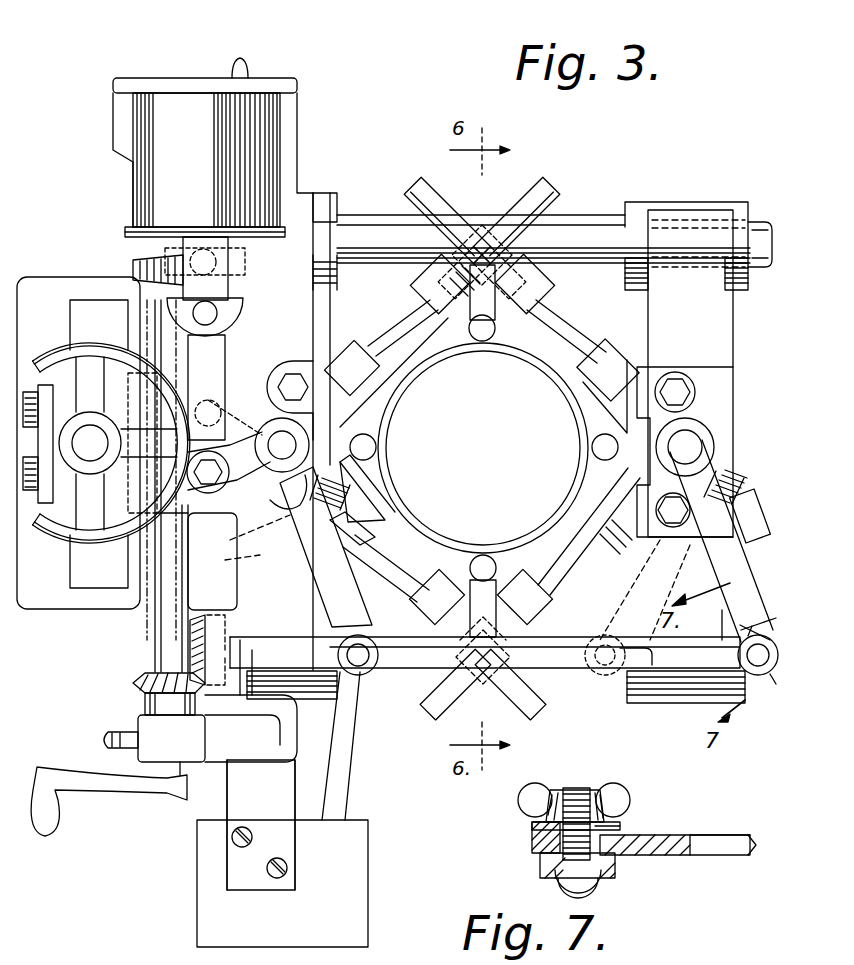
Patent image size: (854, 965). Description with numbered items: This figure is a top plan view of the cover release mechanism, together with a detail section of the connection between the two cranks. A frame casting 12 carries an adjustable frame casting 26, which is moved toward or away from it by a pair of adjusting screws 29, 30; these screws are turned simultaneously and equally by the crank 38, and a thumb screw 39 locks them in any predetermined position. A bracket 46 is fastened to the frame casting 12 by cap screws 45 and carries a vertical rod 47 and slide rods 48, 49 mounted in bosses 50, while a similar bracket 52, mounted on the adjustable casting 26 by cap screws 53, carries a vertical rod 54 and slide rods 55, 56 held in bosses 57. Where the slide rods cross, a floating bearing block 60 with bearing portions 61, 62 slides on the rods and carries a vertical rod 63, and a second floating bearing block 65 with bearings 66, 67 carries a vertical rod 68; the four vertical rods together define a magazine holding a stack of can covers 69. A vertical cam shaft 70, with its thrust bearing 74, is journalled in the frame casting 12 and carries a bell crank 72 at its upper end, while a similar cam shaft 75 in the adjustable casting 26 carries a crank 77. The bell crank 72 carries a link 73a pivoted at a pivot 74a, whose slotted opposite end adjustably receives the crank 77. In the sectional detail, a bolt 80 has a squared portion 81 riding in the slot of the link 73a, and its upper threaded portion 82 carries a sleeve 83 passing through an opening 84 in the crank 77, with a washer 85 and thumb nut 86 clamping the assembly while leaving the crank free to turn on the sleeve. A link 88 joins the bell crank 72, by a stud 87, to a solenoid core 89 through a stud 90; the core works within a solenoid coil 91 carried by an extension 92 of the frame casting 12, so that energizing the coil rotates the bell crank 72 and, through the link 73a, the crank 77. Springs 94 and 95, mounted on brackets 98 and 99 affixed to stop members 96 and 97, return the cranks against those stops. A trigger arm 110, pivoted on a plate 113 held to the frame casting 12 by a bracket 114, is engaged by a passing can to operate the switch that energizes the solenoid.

In FIG. 3, the frame casting 12 is at (318, 310).
In FIG. 3, the adjustable frame casting 26 is at (718, 342).
In FIG. 3, the adjusting screw 29 is at (602, 232).
In FIG. 3, the adjusting screw 30 is at (345, 675).
In FIG. 3, the crank 38 is at (102, 793).
In FIG. 3, the thumb screw 39 is at (118, 735).
In FIG. 3, the cap screws 45 is at (295, 372).
In FIG. 3, the bracket 46 is at (348, 385).
In FIG. 3, the vertical rod 47 is at (372, 443).
In FIG. 3, the slide rod 48 is at (408, 310).
In FIG. 3, the slide rod 49 is at (405, 560).
In FIG. 3, the bosses 50 is at (362, 352).
In FIG. 3, the bracket 52 is at (640, 388).
In FIG. 3, the cap screws 53 is at (668, 380).
In FIG. 3, the vertical rod 54 is at (596, 453).
In FIG. 3, the slide rod 55 is at (565, 335).
In FIG. 3, the slide rod 56 is at (572, 578).
In FIG. 3, the bosses 57 is at (612, 360).
In FIG. 3, the floating bearing block 60 is at (482, 212).
In FIG. 3, the bearing portion 61 is at (432, 286).
In FIG. 3, the bearing portion 62 is at (535, 290).
In FIG. 3, the vertical rod 63 is at (470, 330).
In FIG. 3, the floating bearing block 65 is at (484, 686).
In FIG. 3, the bearing 66 is at (420, 604).
In FIG. 3, the bearing 67 is at (548, 616).
In FIG. 3, the vertical rod 68 is at (496, 568).
In FIG. 3, the can covers 69 is at (483, 448).
In FIG. 3, the vertical cam shaft 70 is at (252, 436).
In FIG. 3, the bell crank 72 is at (270, 425).
In FIG. 3, the link 73a is at (570, 693).
In FIG. 7, the link 73a is at (542, 865).
In FIG. 7, the thrust bearing 74 is at (560, 886).
In FIG. 3, the pivot 74a is at (379, 657).
In FIG. 3, the vertical cam shaft 75 is at (688, 442).
In FIG. 3, the crank 77 is at (700, 446).
In FIG. 3, the bolt 80 is at (765, 685).
In FIG. 7, the bolt 80 is at (598, 890).
In FIG. 7, the squared portion 81 is at (618, 868).
In FIG. 7, the threaded portion 82 is at (576, 788).
In FIG. 7, the sleeve 83 is at (612, 830).
In FIG. 7, the opening 84 is at (530, 838).
In FIG. 7, the washer 85 is at (605, 830).
In FIG. 3, the thumb nut 86 is at (742, 632).
In FIG. 7, the thumb nut 86 is at (518, 800).
In FIG. 3, the stud 87 is at (207, 490).
In FIG. 3, the link 88 is at (212, 360).
In FIG. 3, the solenoid core 89 is at (222, 277).
In FIG. 3, the stud 90 is at (210, 312).
In FIG. 3, the solenoid coil 91 is at (277, 150).
In FIG. 3, the extension 92 is at (195, 78).
In FIG. 3, the spring 94 is at (372, 465).
In FIG. 3, the spring 95 is at (748, 485).
In FIG. 3, the stop member 96 is at (390, 530).
In FIG. 3, the stop member 97 is at (742, 545).
In FIG. 3, the bracket 98 is at (355, 488).
In FIG. 3, the bracket 99 is at (752, 492).
In FIG. 3, the trigger arm 110 is at (340, 780).
In FIG. 3, the plate 113 is at (203, 910).
In FIG. 3, the bracket 114 is at (296, 841).